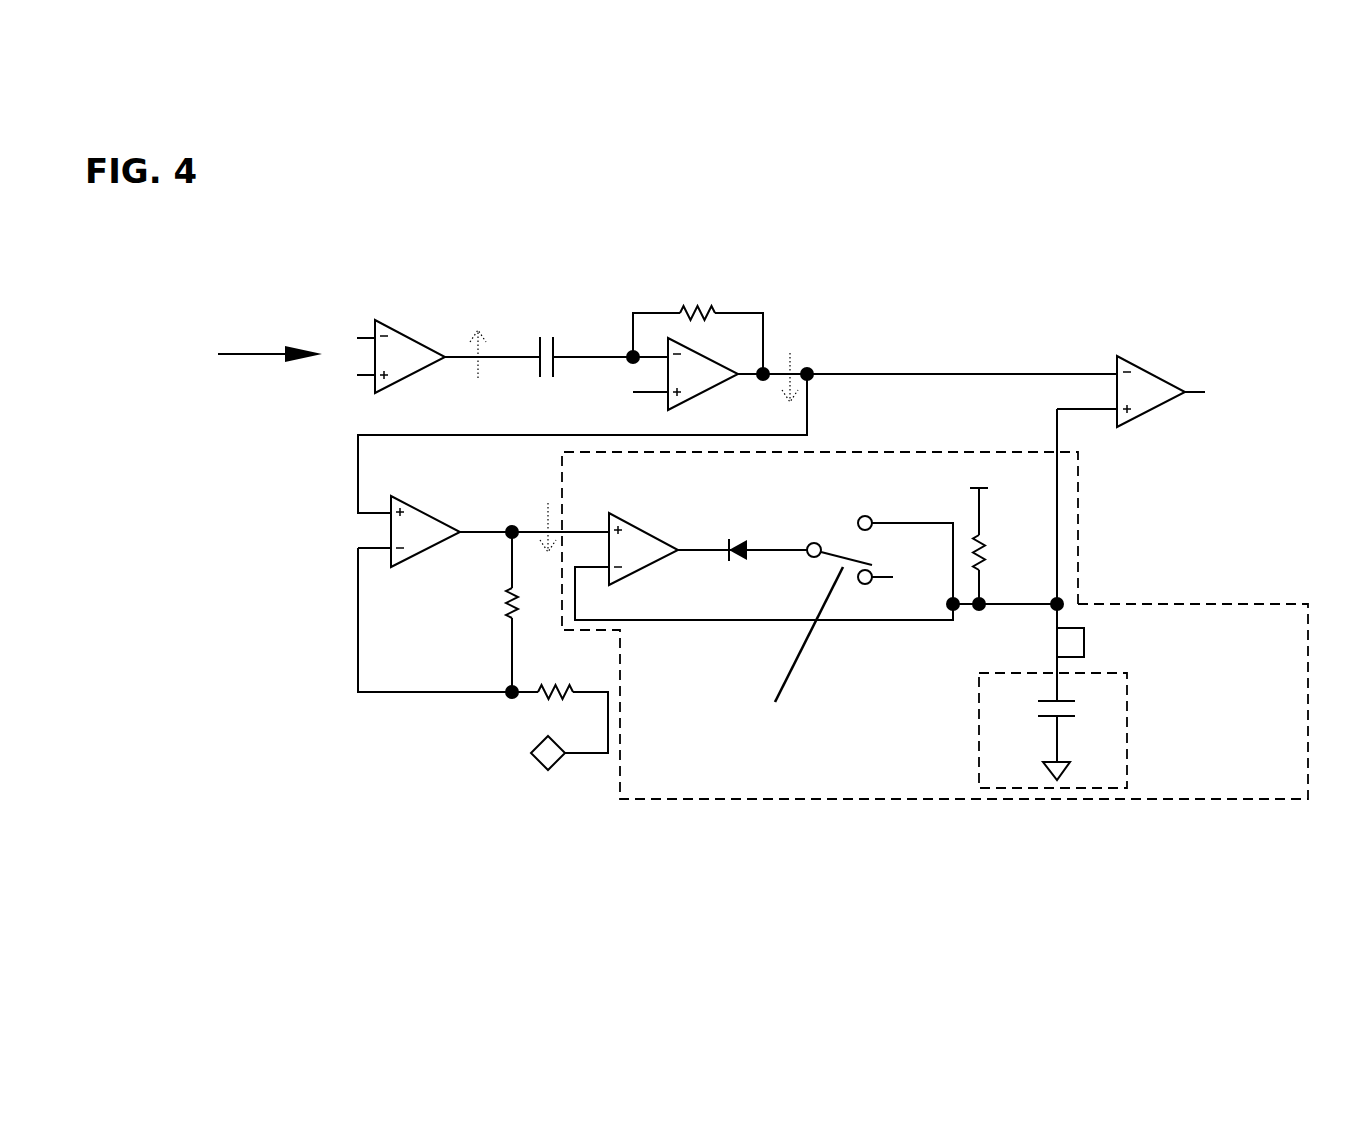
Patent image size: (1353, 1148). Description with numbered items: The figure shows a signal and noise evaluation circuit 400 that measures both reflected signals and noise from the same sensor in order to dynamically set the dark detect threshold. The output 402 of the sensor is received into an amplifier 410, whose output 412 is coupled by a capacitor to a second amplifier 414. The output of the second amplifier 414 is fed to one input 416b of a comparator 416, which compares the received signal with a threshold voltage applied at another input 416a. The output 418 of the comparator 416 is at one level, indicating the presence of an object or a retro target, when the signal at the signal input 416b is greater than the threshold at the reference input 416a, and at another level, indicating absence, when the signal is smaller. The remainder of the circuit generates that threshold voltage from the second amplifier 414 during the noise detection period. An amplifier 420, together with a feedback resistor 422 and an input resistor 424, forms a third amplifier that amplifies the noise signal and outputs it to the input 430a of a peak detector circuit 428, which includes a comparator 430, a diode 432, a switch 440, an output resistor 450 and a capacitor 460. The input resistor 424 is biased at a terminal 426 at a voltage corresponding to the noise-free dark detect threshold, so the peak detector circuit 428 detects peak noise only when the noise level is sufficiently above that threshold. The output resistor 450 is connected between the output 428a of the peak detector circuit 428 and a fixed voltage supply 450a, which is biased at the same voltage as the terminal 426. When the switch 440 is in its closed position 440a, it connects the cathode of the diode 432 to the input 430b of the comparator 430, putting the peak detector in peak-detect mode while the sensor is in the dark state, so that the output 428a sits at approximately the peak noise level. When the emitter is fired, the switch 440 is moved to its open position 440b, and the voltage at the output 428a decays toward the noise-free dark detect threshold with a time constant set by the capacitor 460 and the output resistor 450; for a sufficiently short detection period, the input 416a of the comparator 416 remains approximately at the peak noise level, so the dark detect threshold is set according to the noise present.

The signal and noise evaluation circuit 400 is at (763, 513).
The output of the sensor 402 is at (270, 343).
The amplifier 410 is at (447, 338).
The output of the amplifier 412 is at (586, 345).
The second amplifier 414 is at (716, 324).
The comparator 416 is at (1154, 374).
The reference input of the comparator 416a is at (1101, 437).
The signal input of the comparator 416b is at (1057, 342).
The output of the comparator 418 is at (1212, 417).
The amplifier 420 is at (483, 566).
The resistor Rf 422 is at (533, 612).
The resistor Rin 424 is at (574, 701).
The terminal 426 is at (427, 769).
The peak detector circuit 428 is at (935, 656).
The output of the peak detector circuit 428a is at (1015, 630).
The comparator 430 is at (708, 553).
The input of the peak detector circuit 430a is at (590, 504).
The input of the comparator 430b is at (764, 571).
The diode 432 is at (740, 531).
The switch 440 is at (804, 625).
The closed position 440a is at (888, 515).
The open position 440b is at (887, 586).
The output resistor 450 is at (1010, 546).
The fixed voltage supply 450a is at (985, 490).
The capacitor 460 is at (1136, 730).